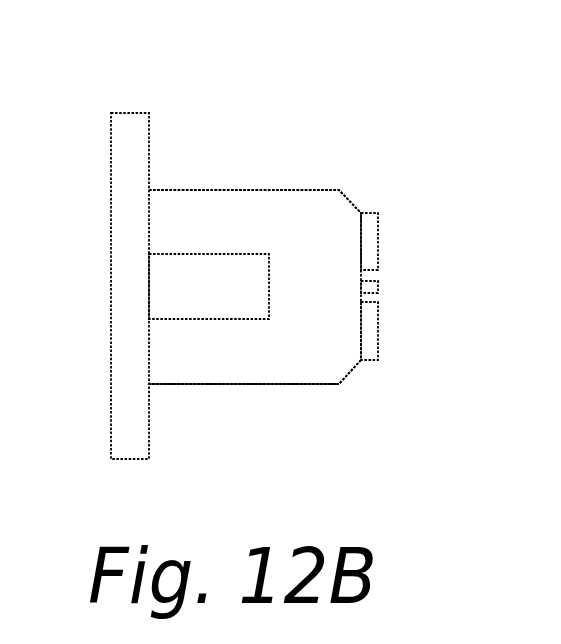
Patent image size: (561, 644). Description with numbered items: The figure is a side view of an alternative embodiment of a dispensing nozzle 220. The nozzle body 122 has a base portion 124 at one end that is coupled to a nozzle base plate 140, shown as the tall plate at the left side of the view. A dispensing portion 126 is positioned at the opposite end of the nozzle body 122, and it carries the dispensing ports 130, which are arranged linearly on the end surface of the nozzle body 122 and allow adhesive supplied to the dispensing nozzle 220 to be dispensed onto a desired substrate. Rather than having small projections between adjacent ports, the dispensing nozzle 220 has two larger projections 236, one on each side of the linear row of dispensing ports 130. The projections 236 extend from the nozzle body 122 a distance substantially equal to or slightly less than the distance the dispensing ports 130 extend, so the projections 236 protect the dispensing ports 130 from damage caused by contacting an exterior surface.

The nozzle base plate 140 is at (127, 138).
The nozzle body 122 is at (218, 215).
The base portion 124 is at (175, 411).
The dispensing portion 126 is at (354, 406).
The dispensing ports 130 is at (372, 287).
The projections 236 is at (370, 230).
The dispensing nozzle 220 is at (340, 126).